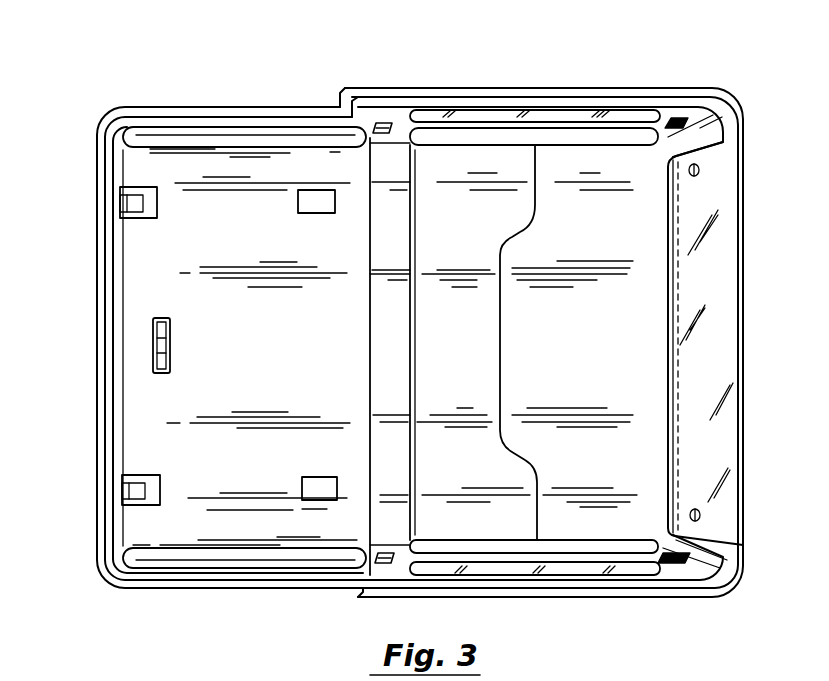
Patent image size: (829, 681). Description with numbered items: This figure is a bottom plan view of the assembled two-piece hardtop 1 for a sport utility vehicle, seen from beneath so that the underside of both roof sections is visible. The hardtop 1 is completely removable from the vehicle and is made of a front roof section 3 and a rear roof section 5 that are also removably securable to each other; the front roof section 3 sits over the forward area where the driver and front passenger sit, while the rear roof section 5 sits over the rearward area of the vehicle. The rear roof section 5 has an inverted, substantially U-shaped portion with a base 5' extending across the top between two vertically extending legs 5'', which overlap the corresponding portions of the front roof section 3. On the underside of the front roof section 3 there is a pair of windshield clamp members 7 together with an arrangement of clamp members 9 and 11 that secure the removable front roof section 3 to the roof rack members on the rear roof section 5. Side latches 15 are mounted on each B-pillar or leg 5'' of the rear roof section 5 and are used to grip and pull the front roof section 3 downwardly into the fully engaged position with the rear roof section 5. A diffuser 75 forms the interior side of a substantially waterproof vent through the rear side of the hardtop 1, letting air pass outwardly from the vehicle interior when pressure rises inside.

The two-piece hardtop 1 is at (187, 67).
The front roof section 3 is at (270, 104).
The rear roof section 5 is at (544, 305).
The base of the rear roof section 5' is at (431, 342).
The legs of the rear roof section 5'' is at (422, 342).
The windshield clamp members 7 is at (145, 184).
The clamp member 9 is at (170, 347).
The clamp members 11 is at (313, 214).
The side latches 15 is at (381, 122).
The diffuser 75 is at (683, 117).